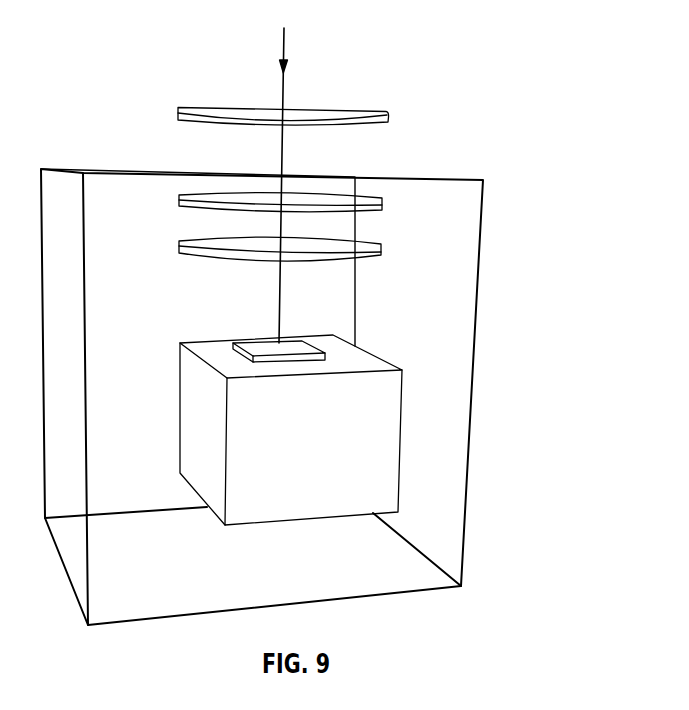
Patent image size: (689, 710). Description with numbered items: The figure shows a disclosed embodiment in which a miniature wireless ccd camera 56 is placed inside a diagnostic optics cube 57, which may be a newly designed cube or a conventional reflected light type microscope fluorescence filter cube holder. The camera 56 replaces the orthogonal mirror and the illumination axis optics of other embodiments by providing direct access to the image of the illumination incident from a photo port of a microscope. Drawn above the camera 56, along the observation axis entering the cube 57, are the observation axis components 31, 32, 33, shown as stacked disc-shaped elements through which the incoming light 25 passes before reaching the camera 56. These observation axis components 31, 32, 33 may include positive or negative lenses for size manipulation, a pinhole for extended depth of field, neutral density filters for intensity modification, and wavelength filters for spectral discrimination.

The beam 25 is at (284, 55).
The observation axis component 31 is at (180, 112).
The observation axis component 32 is at (180, 197).
The observation axis component 33 is at (180, 243).
The miniature wireless ccd camera 56 is at (370, 360).
The diagnostic optics cube 57 is at (532, 152).